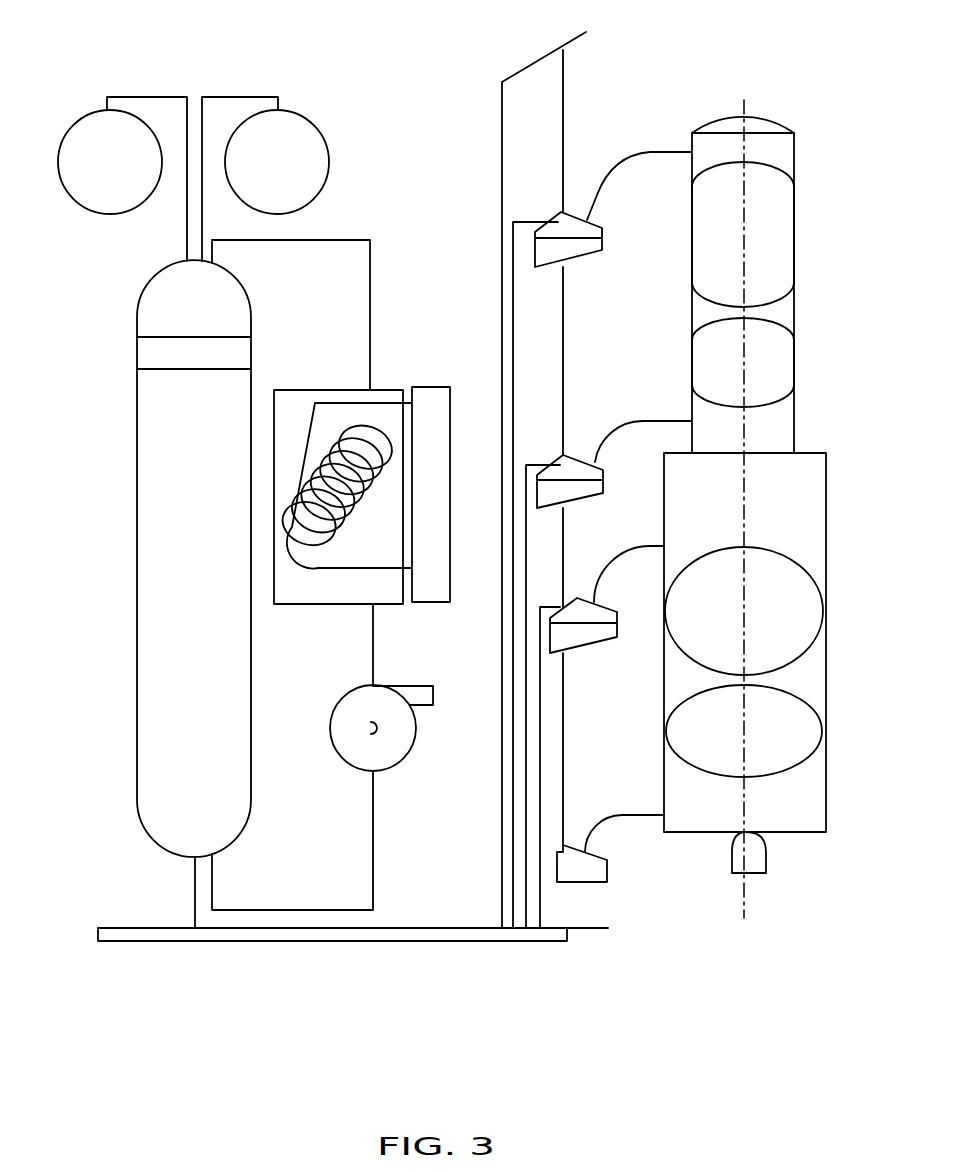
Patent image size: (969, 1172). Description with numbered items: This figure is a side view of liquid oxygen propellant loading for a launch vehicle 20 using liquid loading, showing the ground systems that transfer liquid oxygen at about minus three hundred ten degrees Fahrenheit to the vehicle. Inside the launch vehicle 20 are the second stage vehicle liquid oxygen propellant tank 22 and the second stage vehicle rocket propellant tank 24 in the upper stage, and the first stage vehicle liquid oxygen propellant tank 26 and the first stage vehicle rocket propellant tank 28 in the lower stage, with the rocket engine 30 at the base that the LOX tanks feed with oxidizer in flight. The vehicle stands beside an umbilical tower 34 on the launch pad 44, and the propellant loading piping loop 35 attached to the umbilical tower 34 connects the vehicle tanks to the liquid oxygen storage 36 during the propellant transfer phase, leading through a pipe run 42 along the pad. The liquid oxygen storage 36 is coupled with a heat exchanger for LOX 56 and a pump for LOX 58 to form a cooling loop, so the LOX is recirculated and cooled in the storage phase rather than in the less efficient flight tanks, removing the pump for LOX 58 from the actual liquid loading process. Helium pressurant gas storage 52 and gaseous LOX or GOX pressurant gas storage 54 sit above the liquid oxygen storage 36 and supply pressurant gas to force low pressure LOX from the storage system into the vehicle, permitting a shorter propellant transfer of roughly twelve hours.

The launch vehicle 20 is at (785, 158).
The second stage vehicle liquid oxygen propellant (LOX) tank 22 is at (775, 245).
The second stage vehicle rocket propellant (RP) tank 24 is at (778, 353).
The first stage vehicle liquid oxygen propellant (LOX) tank 26 is at (802, 585).
The first stage vehicle rocket propellant (RP) tank 28 is at (790, 723).
The rocket engine 30 is at (755, 858).
The umbilical tower 34 is at (537, 77).
The propellant loading piping loop 35 is at (337, 238).
The liquid oxygen (LOX) storage 36 is at (240, 312).
The pipe run 42 is at (428, 932).
The launch pad 44 is at (602, 928).
The helium pressurant gas storage 52 is at (98, 143).
The gaseous liquid oxygen (LOX) or gaseous oxygen (GOX) pressurant gas storage 54 is at (295, 145).
The heat exchanger for liquid oxygen (LOX) 56 is at (357, 443).
The pump for liquid oxygen (LOX) 58 is at (357, 702).